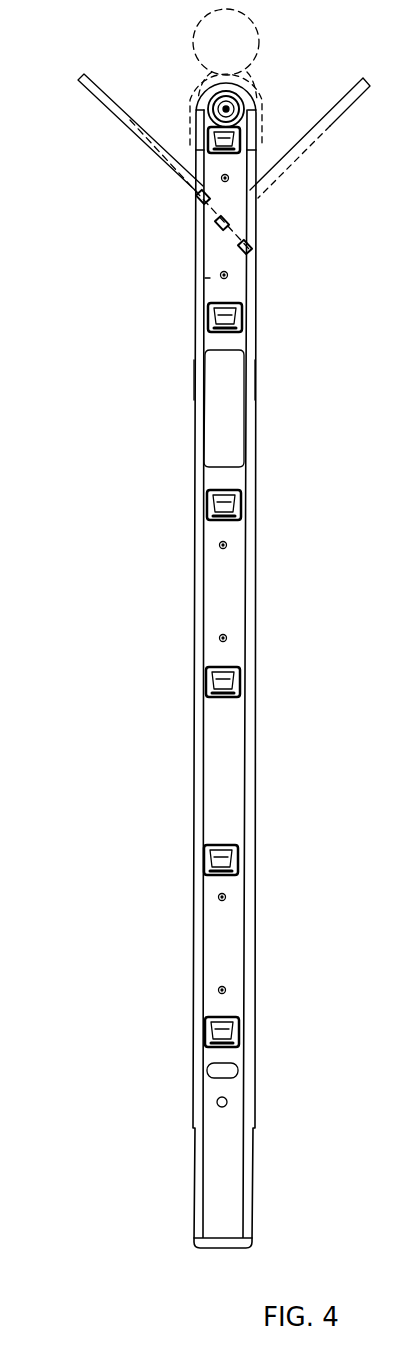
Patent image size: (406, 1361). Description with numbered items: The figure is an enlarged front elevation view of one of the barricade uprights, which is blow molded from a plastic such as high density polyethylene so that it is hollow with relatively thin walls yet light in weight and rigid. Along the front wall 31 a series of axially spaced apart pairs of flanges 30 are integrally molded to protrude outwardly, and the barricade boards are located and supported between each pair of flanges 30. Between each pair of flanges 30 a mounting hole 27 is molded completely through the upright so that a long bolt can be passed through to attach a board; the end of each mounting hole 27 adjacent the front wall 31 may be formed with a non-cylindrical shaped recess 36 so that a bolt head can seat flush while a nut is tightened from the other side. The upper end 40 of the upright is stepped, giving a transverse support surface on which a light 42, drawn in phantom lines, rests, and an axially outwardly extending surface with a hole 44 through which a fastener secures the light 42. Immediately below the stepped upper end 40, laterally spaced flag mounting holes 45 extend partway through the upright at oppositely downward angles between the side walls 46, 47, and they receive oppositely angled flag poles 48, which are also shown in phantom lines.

The mounting holes 27 is at (228, 275).
The flanges 30 is at (240, 158).
The front wall 31 is at (212, 578).
The non-cylindrical shaped recess 36 is at (219, 277).
The upper end 40 is at (197, 180).
The light 42 is at (260, 52).
The hole 44 is at (238, 104).
The flag mounting holes 45 is at (198, 208).
The side wall 46 is at (193, 378).
The side wall 47 is at (257, 372).
The flag poles 48 is at (108, 98).